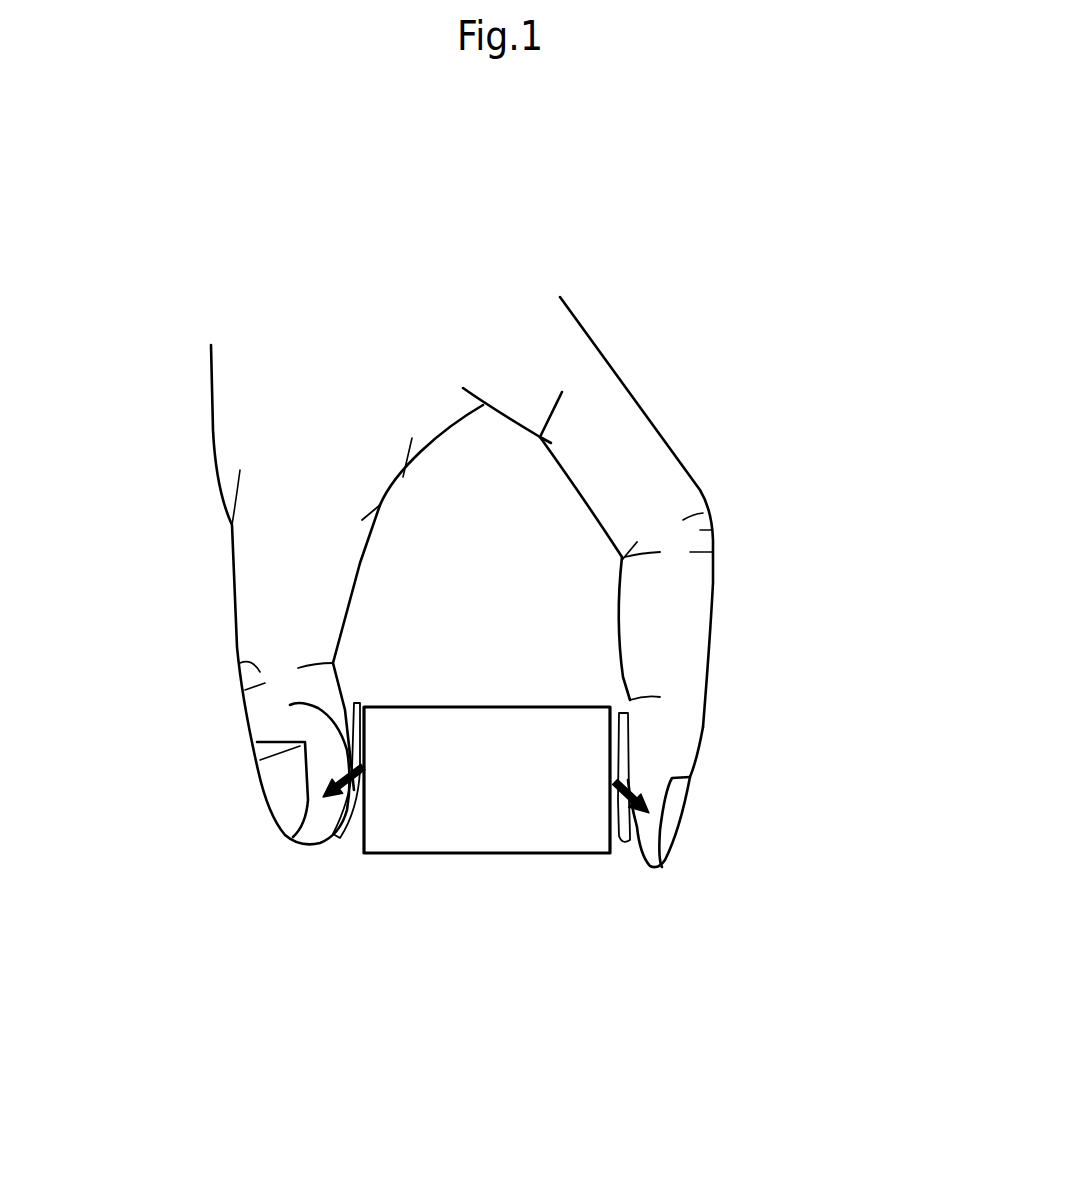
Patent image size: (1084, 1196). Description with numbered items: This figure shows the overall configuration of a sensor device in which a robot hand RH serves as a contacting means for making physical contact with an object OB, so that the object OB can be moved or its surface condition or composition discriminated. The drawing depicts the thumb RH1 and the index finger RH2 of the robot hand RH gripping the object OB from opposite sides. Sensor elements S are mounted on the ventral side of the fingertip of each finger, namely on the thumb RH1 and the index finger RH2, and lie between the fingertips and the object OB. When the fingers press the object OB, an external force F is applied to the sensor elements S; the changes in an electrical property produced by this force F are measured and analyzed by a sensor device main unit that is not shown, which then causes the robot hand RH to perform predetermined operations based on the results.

The robot hand RH is at (680, 413).
The thumb RH1 is at (200, 619).
The index finger RH2 is at (740, 653).
The object OB is at (478, 855).
The sensor element S is at (332, 857).
The external force F is at (290, 705).